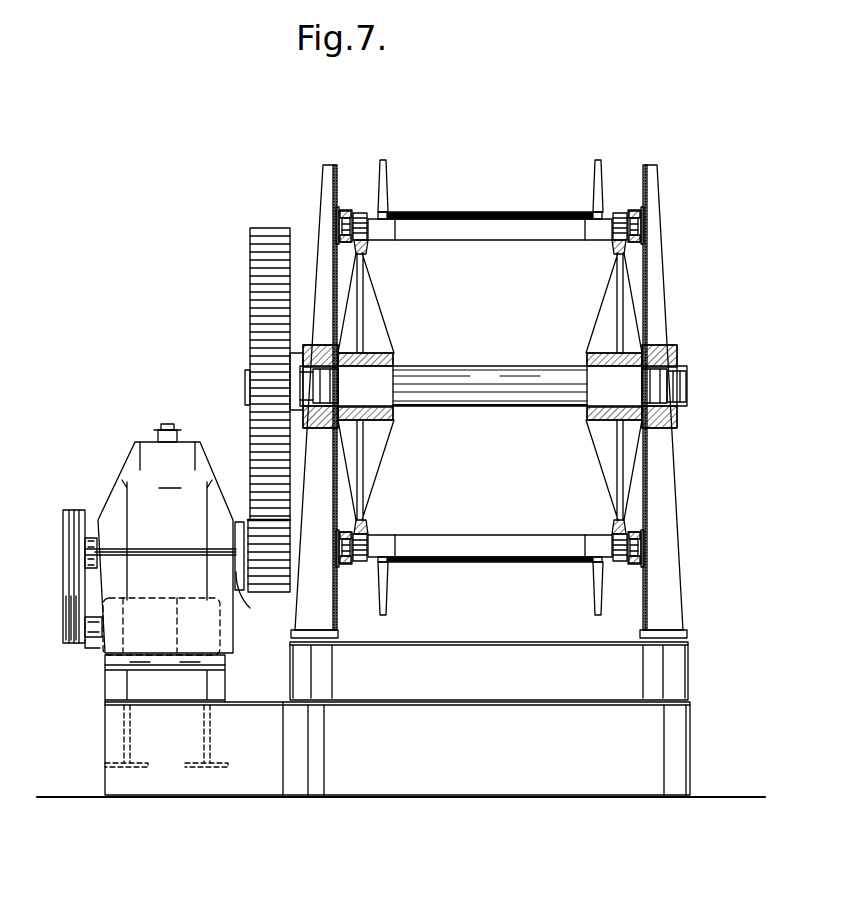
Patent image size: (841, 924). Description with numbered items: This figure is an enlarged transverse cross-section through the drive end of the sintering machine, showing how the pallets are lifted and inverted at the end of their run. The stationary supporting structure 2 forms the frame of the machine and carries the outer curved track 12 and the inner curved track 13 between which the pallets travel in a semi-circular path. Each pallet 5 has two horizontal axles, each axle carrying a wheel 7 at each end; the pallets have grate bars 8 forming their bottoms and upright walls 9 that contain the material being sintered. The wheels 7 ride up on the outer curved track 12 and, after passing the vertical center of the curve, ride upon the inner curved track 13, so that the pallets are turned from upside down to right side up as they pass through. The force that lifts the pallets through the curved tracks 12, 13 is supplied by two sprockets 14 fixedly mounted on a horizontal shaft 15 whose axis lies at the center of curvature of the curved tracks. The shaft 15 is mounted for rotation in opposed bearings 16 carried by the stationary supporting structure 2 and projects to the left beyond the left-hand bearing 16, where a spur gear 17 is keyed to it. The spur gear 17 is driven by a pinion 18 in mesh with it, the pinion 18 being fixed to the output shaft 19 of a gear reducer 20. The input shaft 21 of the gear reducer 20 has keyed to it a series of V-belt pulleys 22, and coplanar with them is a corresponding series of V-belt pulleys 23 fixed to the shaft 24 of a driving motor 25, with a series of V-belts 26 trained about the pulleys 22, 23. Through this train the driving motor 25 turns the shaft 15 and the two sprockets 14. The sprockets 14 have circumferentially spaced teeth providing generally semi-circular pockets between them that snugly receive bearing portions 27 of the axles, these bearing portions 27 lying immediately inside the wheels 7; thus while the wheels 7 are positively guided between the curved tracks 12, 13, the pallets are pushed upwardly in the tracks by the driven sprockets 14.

The stationary supporting structure 2 is at (468, 642).
The pallet 5 is at (472, 241).
The wheel 7 is at (343, 221).
The grate bars 8 is at (482, 213).
The upright walls 9 is at (388, 171).
The outer curved track 12 is at (348, 209).
The inner curved track 13 is at (345, 246).
The sprocket 14 is at (366, 298).
The horizontal shaft 15 is at (467, 403).
The bearing 16 is at (322, 425).
The spur gear 17 is at (268, 280).
The pinion 18 is at (265, 580).
The output shaft 19 is at (240, 588).
The gear reducer 20 is at (165, 538).
The input shaft 21 is at (96, 548).
The V-belt pulleys 22 is at (63, 528).
The V-belt pulleys 23 is at (63, 632).
The shaft 24 is at (93, 645).
The driving motor 25 is at (173, 598).
The V-belts 26 is at (70, 602).
The bearing portion 27 is at (361, 212).